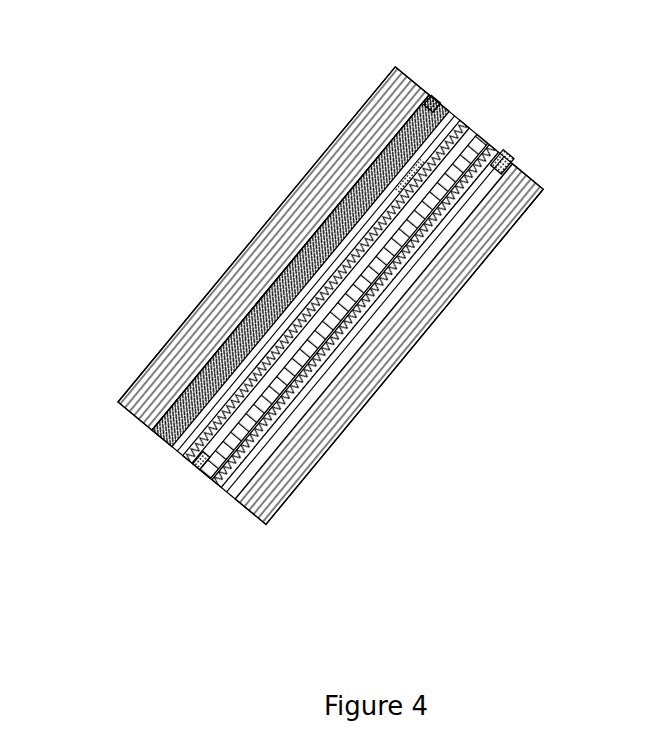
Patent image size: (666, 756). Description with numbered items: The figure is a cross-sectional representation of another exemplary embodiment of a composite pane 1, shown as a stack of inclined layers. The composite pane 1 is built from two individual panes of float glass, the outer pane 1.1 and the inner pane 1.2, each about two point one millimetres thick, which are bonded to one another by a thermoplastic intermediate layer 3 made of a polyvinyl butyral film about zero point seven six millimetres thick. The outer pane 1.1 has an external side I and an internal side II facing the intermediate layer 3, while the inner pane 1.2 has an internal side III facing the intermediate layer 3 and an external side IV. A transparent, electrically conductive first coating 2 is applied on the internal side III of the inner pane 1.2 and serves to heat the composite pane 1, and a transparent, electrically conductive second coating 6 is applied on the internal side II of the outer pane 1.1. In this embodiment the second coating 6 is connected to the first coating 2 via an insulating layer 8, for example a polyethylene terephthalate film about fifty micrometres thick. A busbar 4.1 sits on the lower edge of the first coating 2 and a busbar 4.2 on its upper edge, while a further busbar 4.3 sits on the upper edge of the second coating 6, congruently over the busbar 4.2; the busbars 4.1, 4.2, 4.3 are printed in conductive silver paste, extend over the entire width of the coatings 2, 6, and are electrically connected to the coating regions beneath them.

The composite pane 1 is at (108, 347).
The outer pane 1.1 is at (280, 240).
The inner pane 1.2 is at (408, 323).
The first coating 2 is at (300, 393).
The intermediate layer 3 is at (262, 308).
The busbar 4.1 is at (200, 470).
The busbar 4.2 is at (407, 187).
The busbar 4.3 is at (453, 117).
The second coating 6 is at (370, 158).
The insulating layer 8 is at (210, 437).
The external side of the outer pane I is at (288, 185).
The internal side of the outer pane II is at (435, 95).
The internal side of the inner pane III is at (520, 160).
The external side of the inner pane IV is at (486, 255).